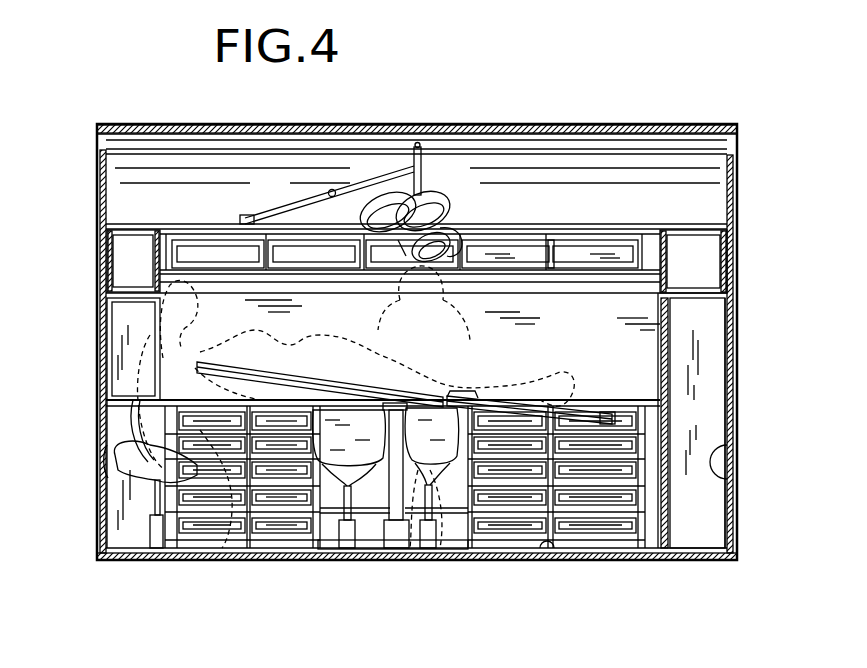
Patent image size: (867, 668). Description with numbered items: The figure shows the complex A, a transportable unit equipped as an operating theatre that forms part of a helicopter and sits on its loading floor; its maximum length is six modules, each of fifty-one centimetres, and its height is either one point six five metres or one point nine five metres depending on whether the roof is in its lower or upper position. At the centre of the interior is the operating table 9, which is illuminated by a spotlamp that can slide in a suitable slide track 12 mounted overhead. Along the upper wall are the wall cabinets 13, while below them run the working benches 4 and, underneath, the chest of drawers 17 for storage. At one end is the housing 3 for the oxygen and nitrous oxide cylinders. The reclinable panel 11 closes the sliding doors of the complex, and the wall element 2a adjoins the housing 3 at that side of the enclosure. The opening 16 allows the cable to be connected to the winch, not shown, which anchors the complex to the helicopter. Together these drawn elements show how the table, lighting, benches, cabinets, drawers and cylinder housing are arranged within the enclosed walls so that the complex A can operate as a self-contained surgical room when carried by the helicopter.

The reclinable panel 11 is at (104, 198).
The slide track 12 is at (524, 234).
The wall cabinets 13 is at (586, 268).
The partition wall 2a is at (735, 370).
The housing 3 is at (705, 492).
The working benches 4 is at (617, 398).
The operating table 9 is at (338, 388).
The opening 16 is at (105, 463).
The chest of drawers 17 is at (597, 530).
The complex A is at (631, 122).